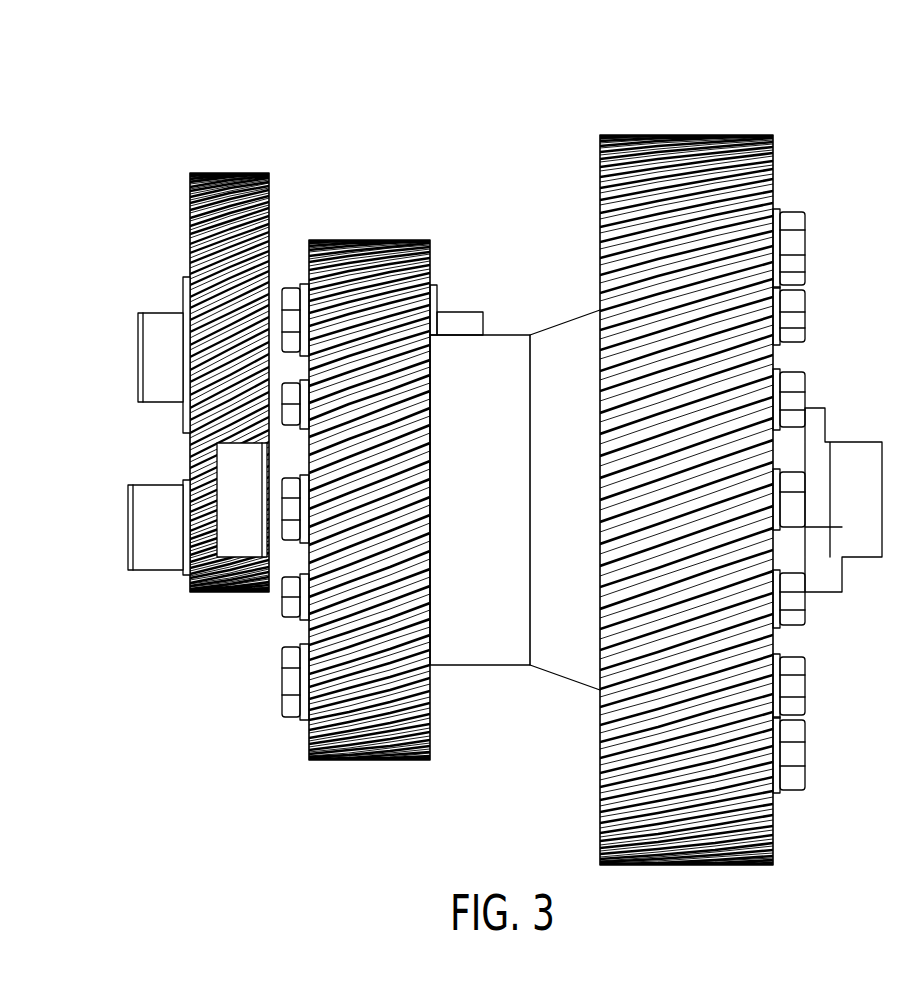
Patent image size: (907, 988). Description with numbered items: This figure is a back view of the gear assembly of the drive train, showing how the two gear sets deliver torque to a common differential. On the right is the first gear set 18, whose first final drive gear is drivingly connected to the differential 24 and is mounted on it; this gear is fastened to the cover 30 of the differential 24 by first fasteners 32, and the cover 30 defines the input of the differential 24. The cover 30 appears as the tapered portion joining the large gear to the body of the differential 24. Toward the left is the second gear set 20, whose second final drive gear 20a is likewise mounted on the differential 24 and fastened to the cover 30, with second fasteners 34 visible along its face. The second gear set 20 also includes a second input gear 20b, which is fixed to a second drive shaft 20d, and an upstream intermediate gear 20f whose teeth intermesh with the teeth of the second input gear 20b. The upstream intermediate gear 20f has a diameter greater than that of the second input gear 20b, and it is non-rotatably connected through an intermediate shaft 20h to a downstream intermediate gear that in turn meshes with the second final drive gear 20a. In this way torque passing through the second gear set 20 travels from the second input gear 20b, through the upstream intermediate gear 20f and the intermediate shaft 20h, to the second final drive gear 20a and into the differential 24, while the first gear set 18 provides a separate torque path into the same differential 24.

The first gear set 18 is at (714, 101).
The second gear set 20 is at (255, 509).
The second final drive gear 20a is at (372, 255).
The second input gear 20b is at (228, 573).
The second drive shaft 20d is at (152, 523).
The upstream intermediate gear 20f is at (231, 190).
The intermediate shaft 20h is at (145, 381).
The differential 24 is at (477, 752).
The cover 30 is at (558, 340).
The first fasteners 32 is at (793, 326).
The second fasteners 34 is at (290, 703).